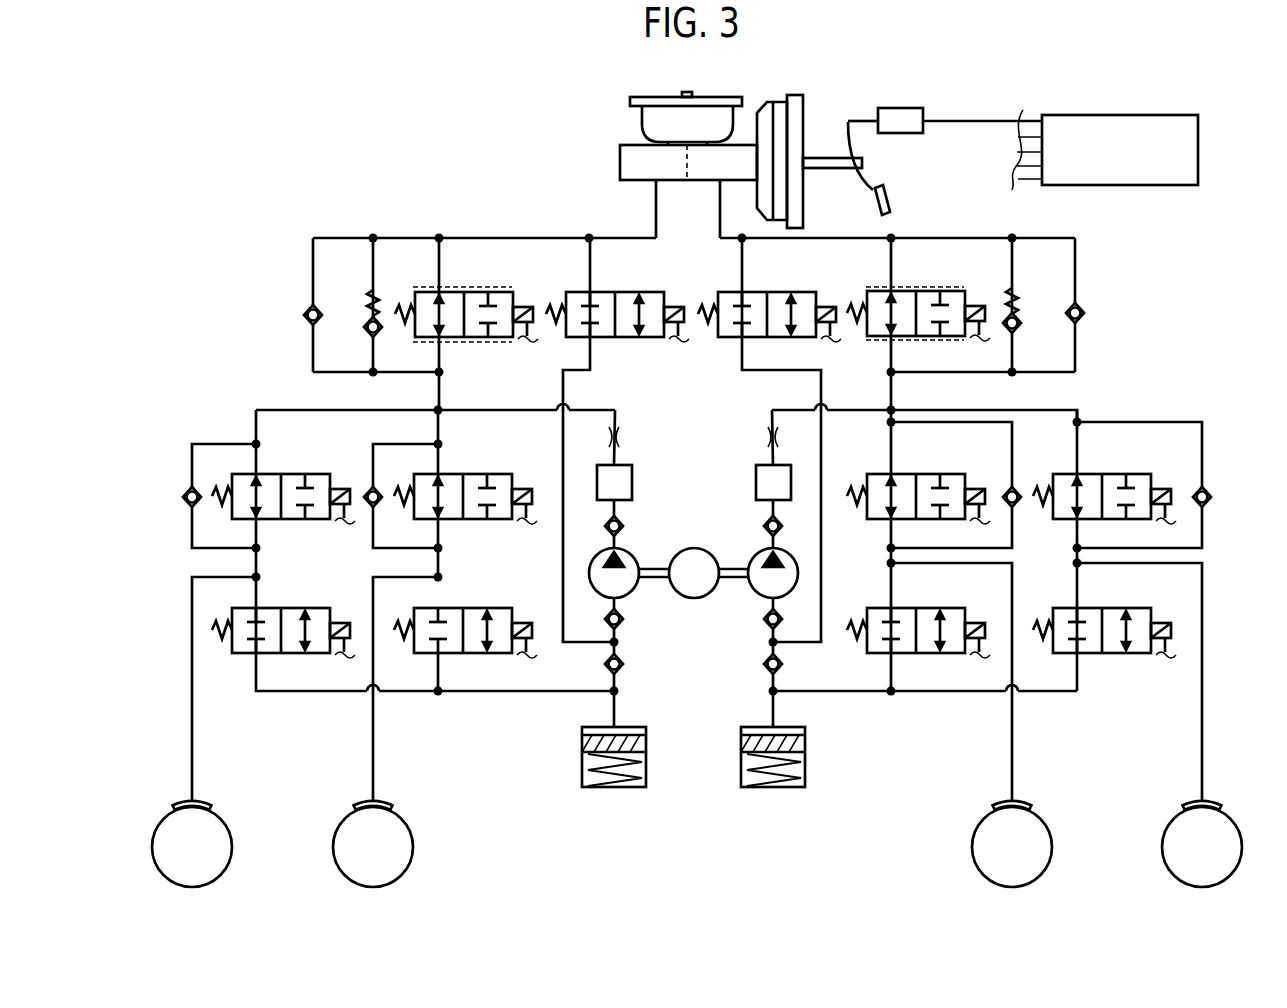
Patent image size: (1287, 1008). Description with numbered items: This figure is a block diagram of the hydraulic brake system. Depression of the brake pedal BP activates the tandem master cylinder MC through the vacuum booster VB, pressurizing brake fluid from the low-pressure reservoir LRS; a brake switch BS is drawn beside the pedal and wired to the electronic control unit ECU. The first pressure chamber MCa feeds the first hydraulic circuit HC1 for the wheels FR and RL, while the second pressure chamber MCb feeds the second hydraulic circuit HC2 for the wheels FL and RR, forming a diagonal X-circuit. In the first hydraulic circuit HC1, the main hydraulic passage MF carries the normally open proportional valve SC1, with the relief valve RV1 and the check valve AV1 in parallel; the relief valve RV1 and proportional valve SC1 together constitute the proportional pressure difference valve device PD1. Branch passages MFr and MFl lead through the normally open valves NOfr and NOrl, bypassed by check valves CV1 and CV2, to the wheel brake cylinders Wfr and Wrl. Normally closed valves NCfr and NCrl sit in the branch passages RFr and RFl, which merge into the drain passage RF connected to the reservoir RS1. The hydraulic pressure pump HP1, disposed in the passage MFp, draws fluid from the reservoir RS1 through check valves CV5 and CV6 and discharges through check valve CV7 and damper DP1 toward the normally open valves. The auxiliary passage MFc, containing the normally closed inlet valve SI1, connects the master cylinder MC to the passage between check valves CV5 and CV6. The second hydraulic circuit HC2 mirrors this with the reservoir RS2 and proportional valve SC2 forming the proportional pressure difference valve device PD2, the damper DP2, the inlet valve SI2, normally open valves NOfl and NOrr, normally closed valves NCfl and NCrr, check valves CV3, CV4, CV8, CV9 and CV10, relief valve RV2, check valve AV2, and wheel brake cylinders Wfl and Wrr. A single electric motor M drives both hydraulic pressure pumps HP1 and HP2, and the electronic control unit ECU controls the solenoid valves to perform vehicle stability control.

The low-pressure reservoir LRS is at (648, 125).
The master cylinder MC is at (618, 152).
The first pressure chamber MCa is at (640, 181).
The second pressure chamber MCb is at (710, 181).
The vacuum booster VB is at (805, 205).
The brake pedal BP is at (864, 181).
The brake switch BS is at (945, 121).
The electronic control unit ECU is at (1105, 150).
The first hydraulic circuit HC1 is at (422, 228).
The second hydraulic circuit HC2 is at (951, 228).
The check valve AV1 is at (304, 316).
The check valve AV2 is at (1084, 316).
The relief valve RV1 is at (364, 328).
The relief valve RV2 is at (1021, 326).
The proportional valve SC1 is at (458, 291).
The proportional solenoid valve SC2 is at (910, 290).
The inlet valve SI1 is at (610, 291).
The inlet valve SI2 is at (762, 291).
The proportional pressure difference valve device PD1 is at (503, 352).
The proportional pressure difference valve device PD2 is at (858, 352).
The main hydraulic passage MF is at (438, 397).
The auxiliary hydraulic passage MFc is at (564, 404).
The passage MFp is at (616, 412).
The branch hydraulic passage MFr is at (258, 433).
The branch hydraulic passage MFl is at (440, 433).
The check valve CV1 is at (193, 487).
The check valve CV2 is at (374, 487).
The check valve CV3 is at (1004, 488).
The check valve CV4 is at (1194, 488).
The check valve CV5 is at (624, 663).
The check valve CV6 is at (624, 618).
The check valve CV7 is at (624, 524).
The check valve CV8 is at (763, 663).
The check valve CV9 is at (763, 618).
The check valve CV10 is at (764, 520).
The normally open valve NOfr is at (283, 474).
The normally open valve NOrl is at (464, 474).
The normally open valve NOfl is at (916, 473).
The normally open valve NOrr is at (1102, 473).
The normally closed valve NCfr is at (283, 608).
The normally closed valve NCrl is at (465, 608).
The normally closed valve NCfl is at (916, 607).
The normally closed valve NCrr is at (1102, 607).
The branch passage RFr is at (296, 693).
The drain passage RF is at (467, 693).
The branch passage RFl is at (440, 676).
The damper DP1 is at (629, 466).
The damper DP2 is at (759, 466).
The hydraulic pressure pump HP1 is at (633, 556).
The hydraulic pressure pump HP2 is at (755, 556).
The electric motor M is at (694, 573).
The reservoir RS1 is at (582, 741).
The reservoir RS2 is at (806, 745).
The wheel brake cylinder Wfr is at (174, 805).
The wheel brake cylinder Wrl is at (355, 805).
The wheel brake cylinder Wfl is at (1030, 805).
The wheel brake cylinder Wrr is at (1220, 805).
The wheel FR is at (192, 847).
The wheel RL is at (373, 847).
The wheel FL is at (1012, 847).
The wheel RR is at (1202, 847).